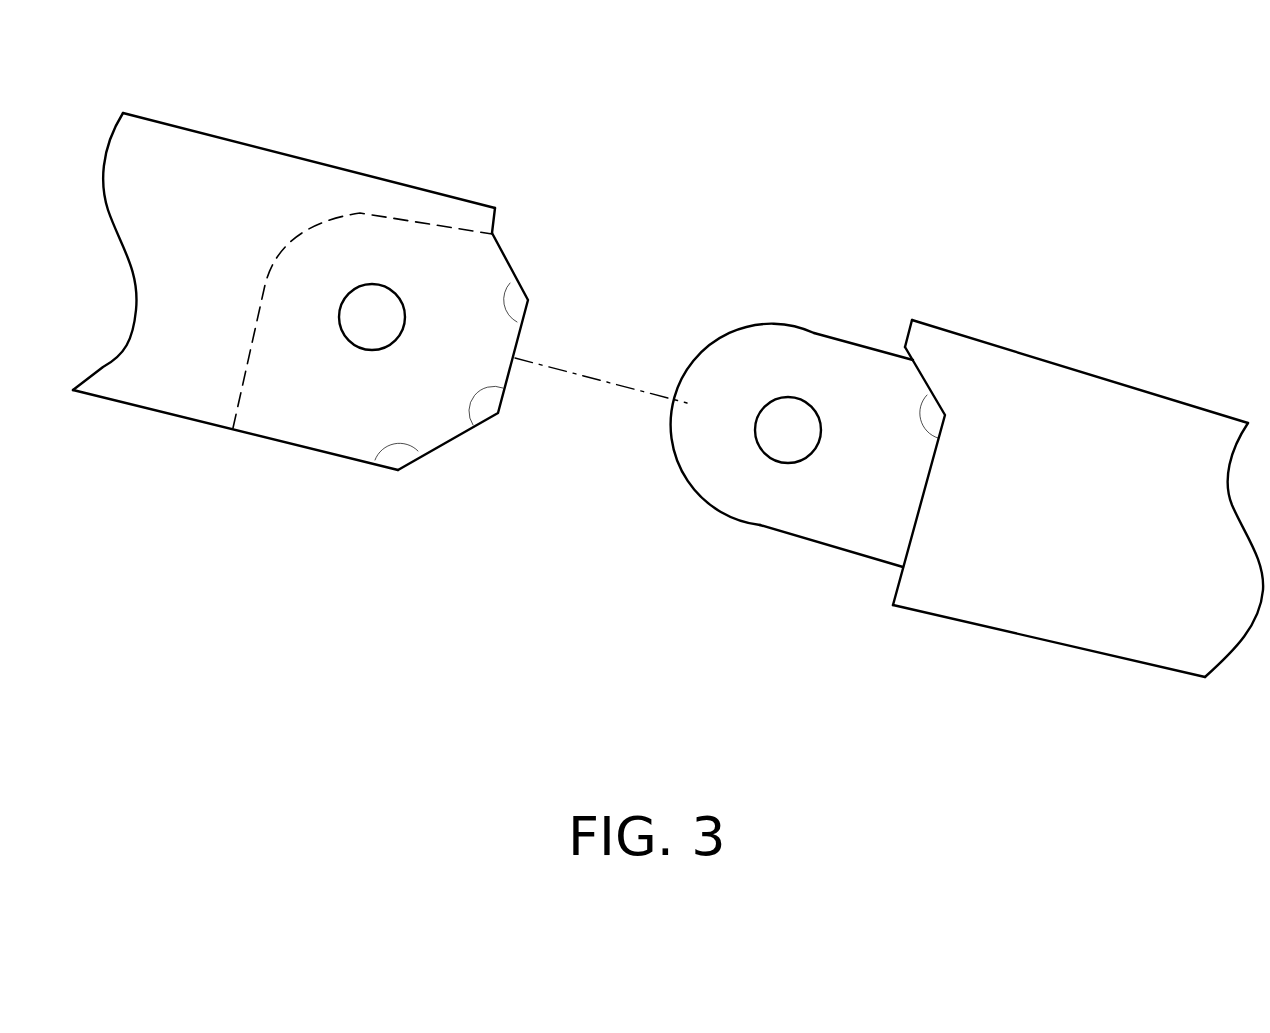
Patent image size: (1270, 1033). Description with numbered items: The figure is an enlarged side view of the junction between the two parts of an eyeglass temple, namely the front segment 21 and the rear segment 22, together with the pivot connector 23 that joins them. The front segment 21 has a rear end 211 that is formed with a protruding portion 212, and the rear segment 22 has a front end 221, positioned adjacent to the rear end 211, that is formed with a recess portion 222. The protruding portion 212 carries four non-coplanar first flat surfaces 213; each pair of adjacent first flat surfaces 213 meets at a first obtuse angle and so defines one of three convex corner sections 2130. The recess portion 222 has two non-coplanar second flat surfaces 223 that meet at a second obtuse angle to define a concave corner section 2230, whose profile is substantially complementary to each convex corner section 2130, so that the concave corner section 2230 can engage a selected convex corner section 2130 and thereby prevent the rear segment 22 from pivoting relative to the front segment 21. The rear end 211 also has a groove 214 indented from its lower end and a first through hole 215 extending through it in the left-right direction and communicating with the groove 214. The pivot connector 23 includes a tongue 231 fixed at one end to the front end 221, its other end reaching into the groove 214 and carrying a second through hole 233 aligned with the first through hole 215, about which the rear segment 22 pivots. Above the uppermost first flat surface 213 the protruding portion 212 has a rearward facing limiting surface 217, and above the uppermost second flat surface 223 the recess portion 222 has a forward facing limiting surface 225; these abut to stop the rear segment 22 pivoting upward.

The front segment 21 is at (163, 157).
The rear end 211 is at (368, 242).
The protruding portion 212 is at (486, 359).
The first flat surfaces 213 is at (510, 267).
The convex corner sections 2130 is at (528, 300).
The groove 214 is at (265, 285).
The first through hole 215 is at (355, 325).
The rearward facing limiting surface 217 is at (495, 220).
The rear segment 22 is at (1177, 413).
The front end 221 is at (1013, 385).
The recess portion 222 is at (857, 398).
The second flat surfaces 223 is at (918, 370).
The concave corner section 2230 is at (943, 417).
The forward facing limiting surface 225 is at (908, 333).
The pivot connector 23 is at (755, 431).
The tongue 231 is at (730, 387).
The second through hole 233 is at (770, 429).